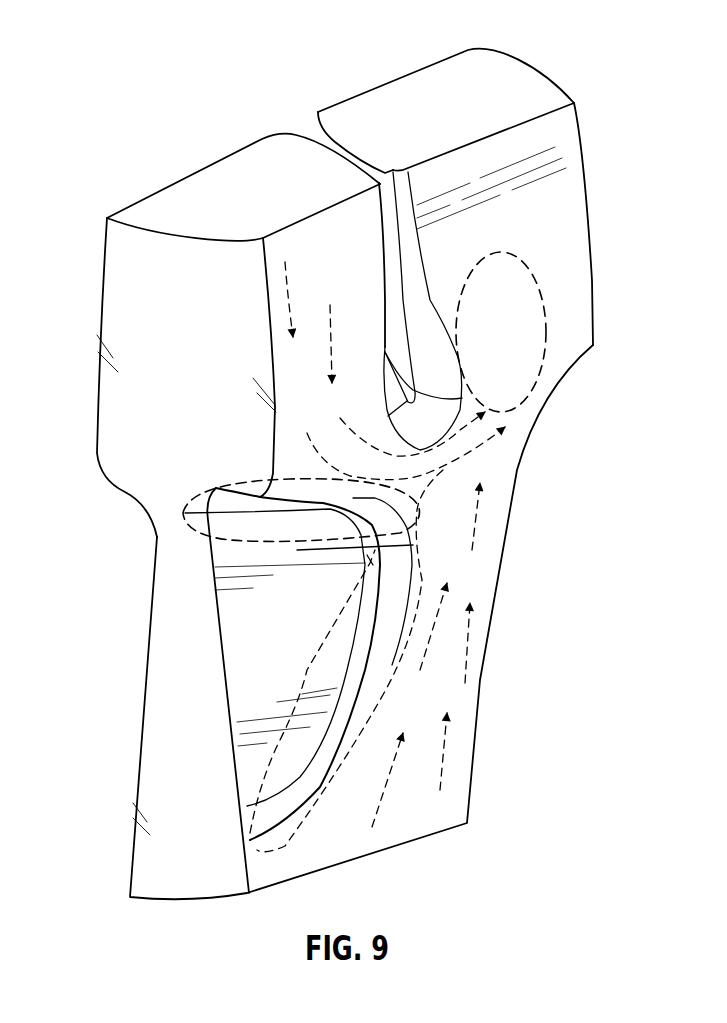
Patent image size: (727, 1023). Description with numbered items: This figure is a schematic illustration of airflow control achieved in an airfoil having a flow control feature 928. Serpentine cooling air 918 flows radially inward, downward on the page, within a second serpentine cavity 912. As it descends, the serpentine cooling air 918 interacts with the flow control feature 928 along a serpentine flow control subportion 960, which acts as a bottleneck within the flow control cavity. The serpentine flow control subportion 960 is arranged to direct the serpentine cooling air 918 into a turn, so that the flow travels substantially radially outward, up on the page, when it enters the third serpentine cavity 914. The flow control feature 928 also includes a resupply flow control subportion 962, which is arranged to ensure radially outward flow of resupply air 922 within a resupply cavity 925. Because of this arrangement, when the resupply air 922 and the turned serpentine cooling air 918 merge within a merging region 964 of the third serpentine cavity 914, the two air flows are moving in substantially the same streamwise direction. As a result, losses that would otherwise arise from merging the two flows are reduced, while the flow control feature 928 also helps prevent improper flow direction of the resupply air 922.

The second serpentine cavity 912 is at (145, 295).
The third serpentine cavity 914 is at (475, 78).
The serpentine cooling air 918 is at (287, 285).
The resupply air 922 is at (445, 752).
The resupply cavity 925 is at (455, 700).
The flow control feature 928 is at (258, 610).
The serpentine flow control subportion 960 is at (258, 513).
The resupply flow control subportion 962 is at (299, 739).
The merging region 964 is at (550, 312).